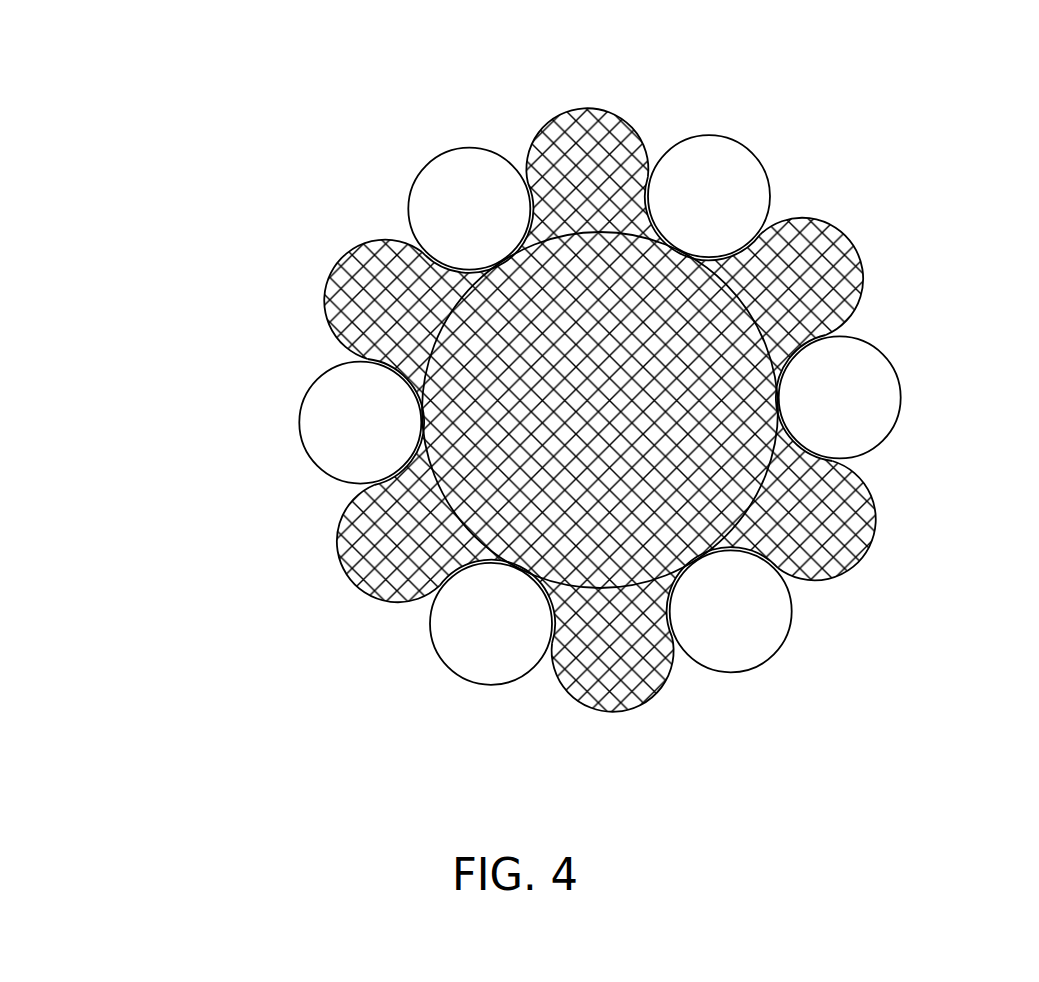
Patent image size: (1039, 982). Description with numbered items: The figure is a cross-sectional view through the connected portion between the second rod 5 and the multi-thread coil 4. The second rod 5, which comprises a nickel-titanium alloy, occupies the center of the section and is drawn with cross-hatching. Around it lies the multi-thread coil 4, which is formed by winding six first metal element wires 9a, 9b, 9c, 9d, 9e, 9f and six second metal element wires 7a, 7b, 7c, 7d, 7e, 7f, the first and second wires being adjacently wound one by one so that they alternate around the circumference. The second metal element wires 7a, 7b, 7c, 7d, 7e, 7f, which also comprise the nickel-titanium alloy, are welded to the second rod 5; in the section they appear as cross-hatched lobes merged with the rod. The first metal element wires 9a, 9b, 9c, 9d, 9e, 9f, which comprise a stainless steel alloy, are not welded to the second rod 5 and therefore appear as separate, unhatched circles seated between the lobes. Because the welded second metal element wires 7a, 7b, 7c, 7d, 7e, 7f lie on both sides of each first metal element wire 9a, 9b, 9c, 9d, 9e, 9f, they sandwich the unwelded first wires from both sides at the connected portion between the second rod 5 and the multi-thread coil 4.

The multi-thread coil 4 is at (601, 419).
The second rod 5 is at (745, 316).
The second metal element wire 7a is at (852, 542).
The second metal element wire 7b is at (815, 250).
The second metal element wire 7c is at (583, 148).
The second metal element wire 7d is at (370, 280).
The second metal element wire 7e is at (358, 568).
The second metal element wire 7f is at (612, 705).
The first metal element wire 9a is at (855, 390).
The first metal element wire 9b is at (722, 165).
The first metal element wire 9c is at (465, 190).
The first metal element wire 9d is at (330, 425).
The first metal element wire 9e is at (473, 660).
The first metal element wire 9f is at (738, 652).